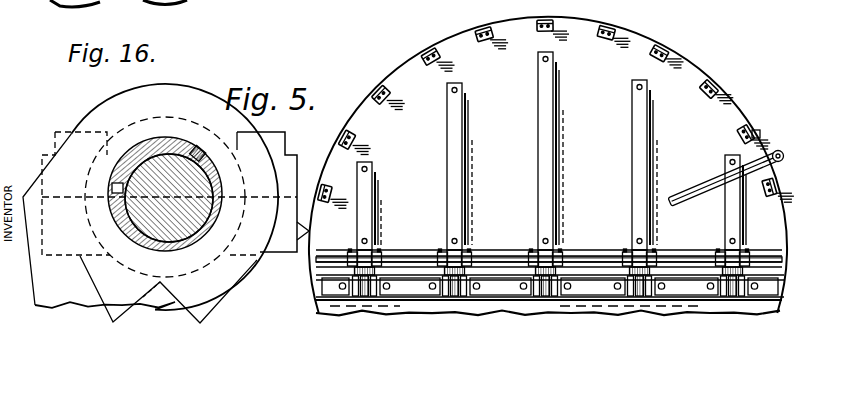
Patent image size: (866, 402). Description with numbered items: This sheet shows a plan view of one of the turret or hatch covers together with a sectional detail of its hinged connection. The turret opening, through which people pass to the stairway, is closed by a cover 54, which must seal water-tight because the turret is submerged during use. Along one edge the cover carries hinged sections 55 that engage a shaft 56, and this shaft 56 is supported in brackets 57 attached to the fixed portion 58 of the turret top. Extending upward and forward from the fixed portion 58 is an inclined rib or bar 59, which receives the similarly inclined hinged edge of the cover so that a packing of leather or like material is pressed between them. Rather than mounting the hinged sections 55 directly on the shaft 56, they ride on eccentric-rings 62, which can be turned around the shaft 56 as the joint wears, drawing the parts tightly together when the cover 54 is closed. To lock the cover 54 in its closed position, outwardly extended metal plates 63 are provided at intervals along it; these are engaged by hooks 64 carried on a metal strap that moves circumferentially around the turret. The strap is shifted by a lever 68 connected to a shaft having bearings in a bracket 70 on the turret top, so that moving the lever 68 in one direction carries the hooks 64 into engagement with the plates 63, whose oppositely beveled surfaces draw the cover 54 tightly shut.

In FIG. 5, the cover 54 is at (693, 80).
In FIG. 16, the hinged sections 55 is at (34, 273).
In FIG. 5, the hinged sections 55 is at (376, 216).
In FIG. 16, the shaft 56 is at (310, 265).
In FIG. 5, the shaft 56 is at (588, 257).
In FIG. 16, the brackets 57 is at (232, 287).
In FIG. 5, the brackets 57 is at (787, 280).
In FIG. 5, the fixed portion of the turret 58 is at (782, 300).
In FIG. 5, the rib or bar 59 is at (786, 252).
In FIG. 16, the eccentric-rings 62 is at (220, 176).
In FIG. 5, the metal plates 63 is at (756, 130).
In FIG. 5, the hooks 64 is at (761, 137).
In FIG. 5, the lever 68 is at (695, 190).
In FIG. 5, the bracket 70 is at (780, 168).